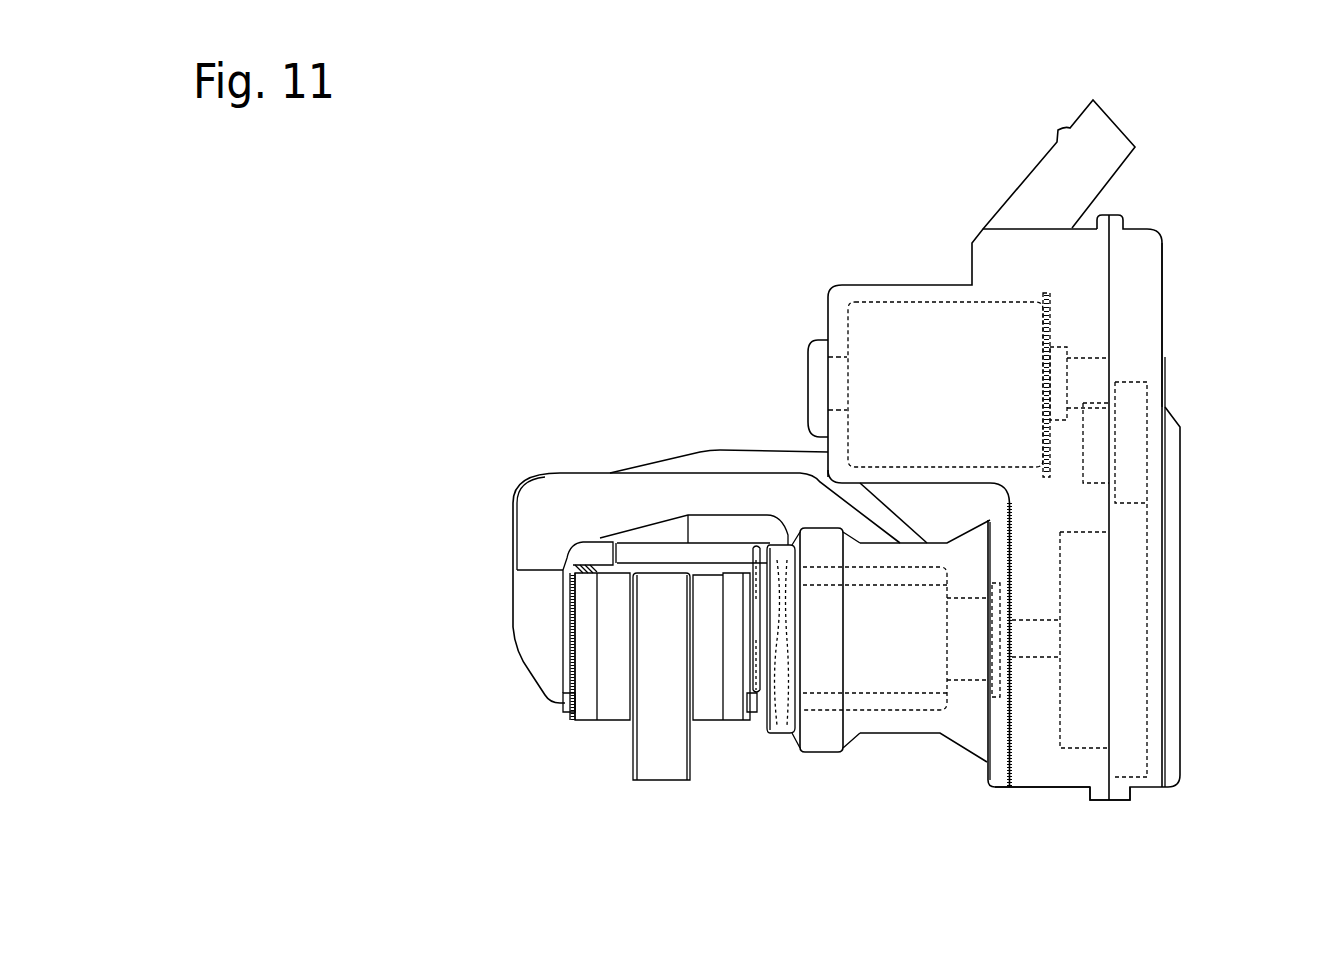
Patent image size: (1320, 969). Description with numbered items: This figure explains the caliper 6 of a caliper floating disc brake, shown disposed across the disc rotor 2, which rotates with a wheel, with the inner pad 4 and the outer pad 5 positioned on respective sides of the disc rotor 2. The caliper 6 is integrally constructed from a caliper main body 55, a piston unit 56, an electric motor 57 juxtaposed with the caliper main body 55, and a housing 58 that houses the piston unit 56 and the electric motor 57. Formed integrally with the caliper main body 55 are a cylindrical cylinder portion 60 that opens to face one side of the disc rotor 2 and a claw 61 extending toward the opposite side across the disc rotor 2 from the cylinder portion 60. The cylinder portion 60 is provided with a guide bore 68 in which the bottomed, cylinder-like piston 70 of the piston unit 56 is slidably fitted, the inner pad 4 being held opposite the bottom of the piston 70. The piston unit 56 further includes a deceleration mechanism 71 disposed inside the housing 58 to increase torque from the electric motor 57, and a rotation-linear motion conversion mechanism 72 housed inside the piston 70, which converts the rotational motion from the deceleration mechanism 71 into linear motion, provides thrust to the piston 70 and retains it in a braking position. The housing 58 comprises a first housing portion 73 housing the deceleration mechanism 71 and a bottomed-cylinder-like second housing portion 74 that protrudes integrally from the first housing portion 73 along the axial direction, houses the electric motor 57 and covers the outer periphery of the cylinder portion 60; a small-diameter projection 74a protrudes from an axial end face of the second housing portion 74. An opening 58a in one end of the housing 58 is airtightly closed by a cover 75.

The disc rotor 2 is at (665, 768).
The inner pad 4 is at (708, 705).
The outer pad 5 is at (612, 707).
The caliper 6 is at (1197, 243).
The caliper main body 55 is at (593, 463).
The piston unit 56 is at (877, 673).
The electric motor 57 is at (925, 300).
The housing 58 is at (1057, 790).
The opening 58a is at (1113, 790).
The cylinder portion 60 is at (893, 723).
The claw 61 is at (527, 610).
The guide bore 68 is at (790, 680).
The piston 70 is at (763, 597).
The deceleration mechanism 71 is at (1130, 570).
The rotation-linear motion conversion mechanism 72 is at (930, 657).
The first housing portion 73 is at (1030, 790).
The second housing portion 74 is at (865, 300).
The small-diameter projection 74a is at (817, 388).
The cover 75 is at (1147, 297).